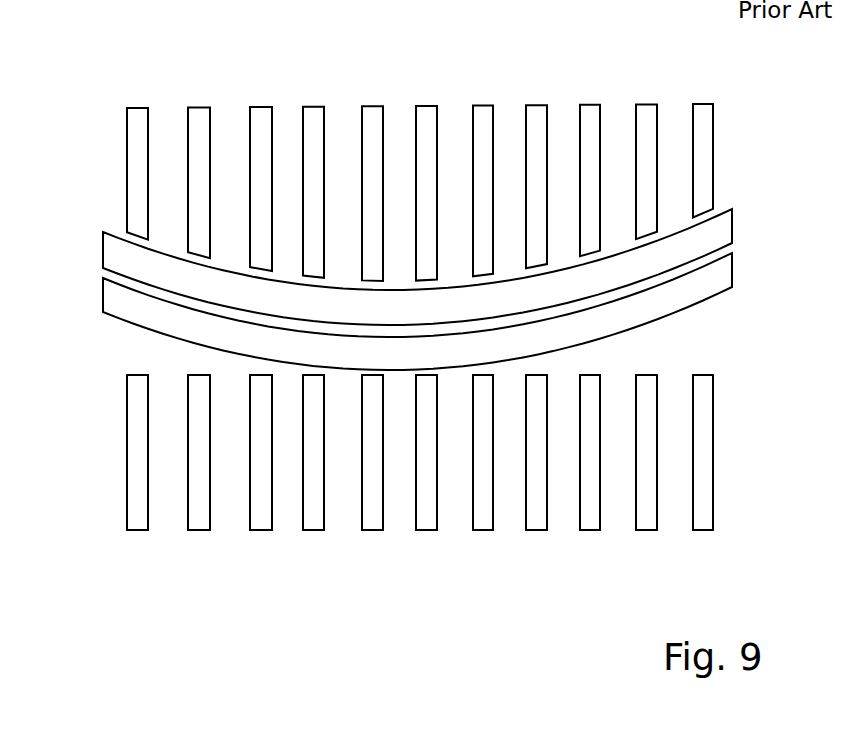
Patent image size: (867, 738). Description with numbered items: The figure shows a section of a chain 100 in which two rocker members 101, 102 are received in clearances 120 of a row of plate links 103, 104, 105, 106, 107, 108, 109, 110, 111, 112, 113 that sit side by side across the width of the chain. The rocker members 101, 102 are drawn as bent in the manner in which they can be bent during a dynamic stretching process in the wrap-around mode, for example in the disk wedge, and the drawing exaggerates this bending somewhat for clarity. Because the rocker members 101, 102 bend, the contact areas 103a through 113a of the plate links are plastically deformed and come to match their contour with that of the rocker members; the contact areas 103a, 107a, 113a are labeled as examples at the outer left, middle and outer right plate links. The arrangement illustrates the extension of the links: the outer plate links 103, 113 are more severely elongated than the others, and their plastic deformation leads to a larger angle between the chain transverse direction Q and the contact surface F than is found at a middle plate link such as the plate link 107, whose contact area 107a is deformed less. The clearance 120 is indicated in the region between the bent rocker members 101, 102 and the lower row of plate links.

The chain 100 is at (415, 311).
The rocker member 101 is at (723, 230).
The rocker member 102 is at (723, 278).
The plate link 103 is at (137, 518).
The plate link 104 is at (200, 522).
The plate link 105 is at (260, 517).
The plate link 106 is at (308, 520).
The plate link 107 is at (373, 515).
The plate link 108 is at (425, 518).
The plate link 109 is at (487, 515).
The plate link 110 is at (532, 517).
The plate link 111 is at (593, 512).
The plate link 112 is at (645, 515).
The plate link 113 is at (707, 512).
The contact area 103a is at (137, 203).
The contact area 107a is at (370, 262).
The contact area 113a is at (702, 178).
The clearance 120 is at (716, 352).
The contact surface F is at (93, 225).
The chain transverse direction Q is at (670, 74).